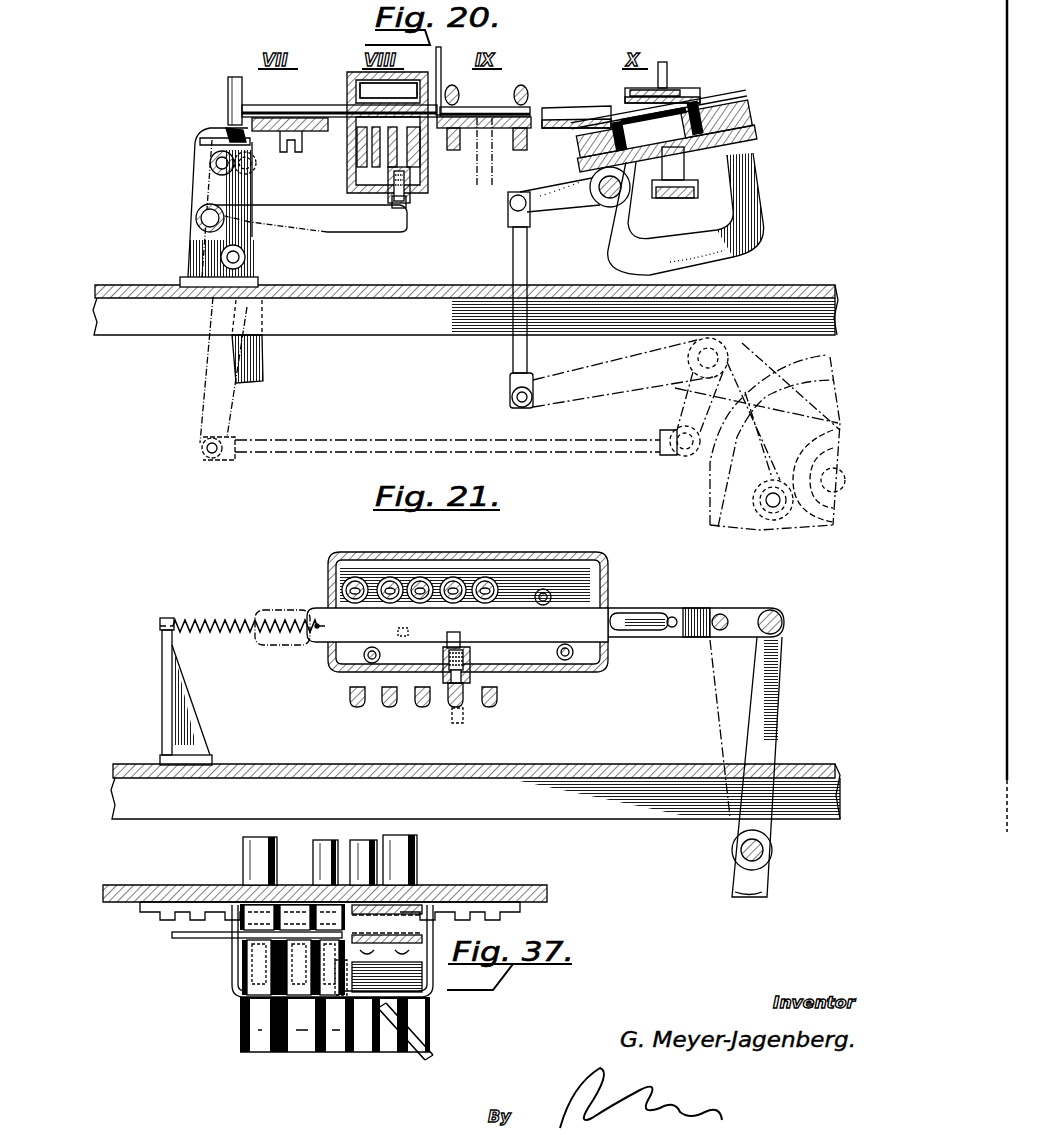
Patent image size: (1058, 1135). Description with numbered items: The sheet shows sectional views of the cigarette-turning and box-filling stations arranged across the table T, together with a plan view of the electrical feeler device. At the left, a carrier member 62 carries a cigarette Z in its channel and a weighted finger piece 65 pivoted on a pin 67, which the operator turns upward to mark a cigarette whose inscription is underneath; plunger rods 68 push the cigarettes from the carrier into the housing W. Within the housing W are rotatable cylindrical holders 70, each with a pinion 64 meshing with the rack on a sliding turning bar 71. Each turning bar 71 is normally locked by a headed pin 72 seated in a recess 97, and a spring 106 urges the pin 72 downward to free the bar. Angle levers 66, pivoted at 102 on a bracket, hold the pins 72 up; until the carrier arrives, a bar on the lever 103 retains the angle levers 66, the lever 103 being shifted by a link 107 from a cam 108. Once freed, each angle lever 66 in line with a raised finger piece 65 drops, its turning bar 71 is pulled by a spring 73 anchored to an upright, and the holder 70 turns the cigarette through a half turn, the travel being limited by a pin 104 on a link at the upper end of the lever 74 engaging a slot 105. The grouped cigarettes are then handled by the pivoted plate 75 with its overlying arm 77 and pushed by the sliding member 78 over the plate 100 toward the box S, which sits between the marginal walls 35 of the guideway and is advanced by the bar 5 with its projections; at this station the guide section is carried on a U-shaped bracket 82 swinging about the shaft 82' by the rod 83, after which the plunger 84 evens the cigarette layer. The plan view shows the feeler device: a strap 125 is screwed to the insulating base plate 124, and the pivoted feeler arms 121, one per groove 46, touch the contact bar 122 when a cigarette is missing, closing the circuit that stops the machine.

In FIG. 20, the table T is at (420, 322).
In FIG. 21, the table T is at (525, 805).
In FIG. 20, the finger piece 65 is at (226, 128).
In FIG. 20, the plunger rods 68 is at (285, 102).
In FIG. 20, the carrier member 62 is at (322, 132).
In FIG. 20, the pin 67 is at (238, 135).
In FIG. 20, the angle lever 66 is at (192, 168).
In FIG. 21, the angle lever 66 is at (422, 707).
In FIG. 20, the pivot 102 is at (196, 218).
In FIG. 20, the lever 103 is at (262, 352).
In FIG. 20, the housing W is at (350, 82).
In FIG. 21, the housing W is at (608, 580).
In FIG. 20, the pinion 64 is at (388, 91).
In FIG. 21, the pinion 64 is at (495, 577).
In FIG. 20, the cylindrical holder 70 is at (352, 100).
In FIG. 21, the cylindrical holder 70 is at (342, 583).
In FIG. 20, the turning bar 71 is at (350, 163).
In FIG. 21, the turning bar 71 is at (322, 638).
In FIG. 20, the spring 106 is at (412, 181).
In FIG. 21, the spring 106 is at (470, 657).
In FIG. 20, the pin 72 is at (408, 204).
In FIG. 21, the pin 72 is at (448, 652).
In FIG. 20, the sliding member 78 is at (442, 80).
In FIG. 20, the arm 77 is at (513, 90).
In FIG. 20, the cigarette Z is at (528, 105).
In FIG. 37, the cigarette Z is at (392, 842).
In FIG. 20, the plate 75 is at (504, 150).
In FIG. 20, the plate 100 is at (580, 110).
In FIG. 20, the plunger 84 is at (695, 92).
In FIG. 20, the box S is at (753, 118).
In FIG. 20, the marginal wall 35 is at (758, 128).
In FIG. 20, the bar 5 is at (672, 198).
In FIG. 20, the U-shaped bracket 82 is at (706, 214).
In FIG. 20, the shaft 82' is at (575, 205).
In FIG. 20, the rod 83 is at (530, 266).
In FIG. 20, the link 107 is at (672, 408).
In FIG. 20, the cam 108 is at (805, 520).
In FIG. 21, the spring 73 is at (198, 625).
In FIG. 21, the recess 97 is at (463, 634).
In FIG. 21, the pin 104 is at (675, 612).
In FIG. 21, the slot 105 is at (645, 635).
In FIG. 21, the lever 74 is at (770, 720).
In FIG. 37, the base plate 124 is at (540, 888).
In FIG. 37, the strap 125 is at (240, 967).
In FIG. 37, the contact bar 122 is at (248, 1012).
In FIG. 37, the feeler arm 121 is at (330, 1005).
In FIG. 37, the groove 46 is at (295, 1040).